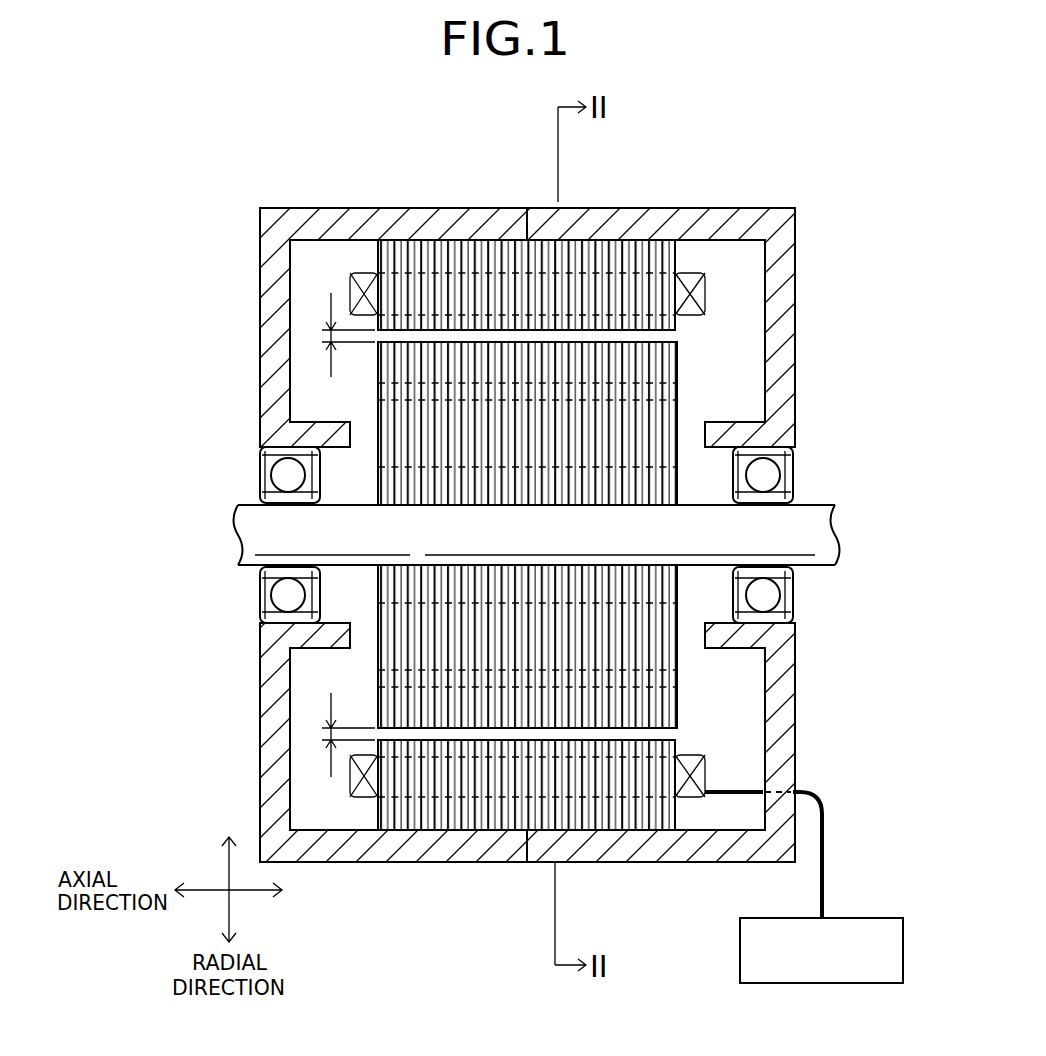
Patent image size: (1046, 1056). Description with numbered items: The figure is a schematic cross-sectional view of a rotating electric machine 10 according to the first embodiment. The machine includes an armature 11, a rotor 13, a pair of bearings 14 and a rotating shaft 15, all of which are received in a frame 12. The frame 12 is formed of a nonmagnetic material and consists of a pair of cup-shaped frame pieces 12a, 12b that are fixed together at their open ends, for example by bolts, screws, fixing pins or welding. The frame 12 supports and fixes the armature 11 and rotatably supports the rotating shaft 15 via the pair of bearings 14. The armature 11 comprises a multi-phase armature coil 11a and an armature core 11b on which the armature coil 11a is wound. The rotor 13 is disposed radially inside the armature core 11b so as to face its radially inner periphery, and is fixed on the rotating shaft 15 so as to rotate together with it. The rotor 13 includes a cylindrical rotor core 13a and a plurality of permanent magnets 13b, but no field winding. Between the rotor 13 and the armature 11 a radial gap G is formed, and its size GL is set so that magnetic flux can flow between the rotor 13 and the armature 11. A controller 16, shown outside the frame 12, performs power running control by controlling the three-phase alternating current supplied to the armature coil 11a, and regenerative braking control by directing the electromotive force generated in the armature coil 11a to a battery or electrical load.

The rotating electric machine 10 is at (270, 164).
The armature 11 is at (527, 463).
The armature coil 11a is at (527, 137).
The armature core 11b is at (490, 292).
The frame 12 is at (583, 211).
The frame piece 12a is at (437, 850).
The frame piece 12b is at (550, 845).
The rotor 13 is at (602, 412).
The rotor core 13a is at (597, 365).
The permanent magnets 13b is at (635, 393).
The bearings 14 is at (290, 478).
The rotating shaft 15 is at (270, 538).
The controller 16 is at (853, 918).
The radial gap G is at (411, 343).
The size of the radial gap GL is at (325, 333).